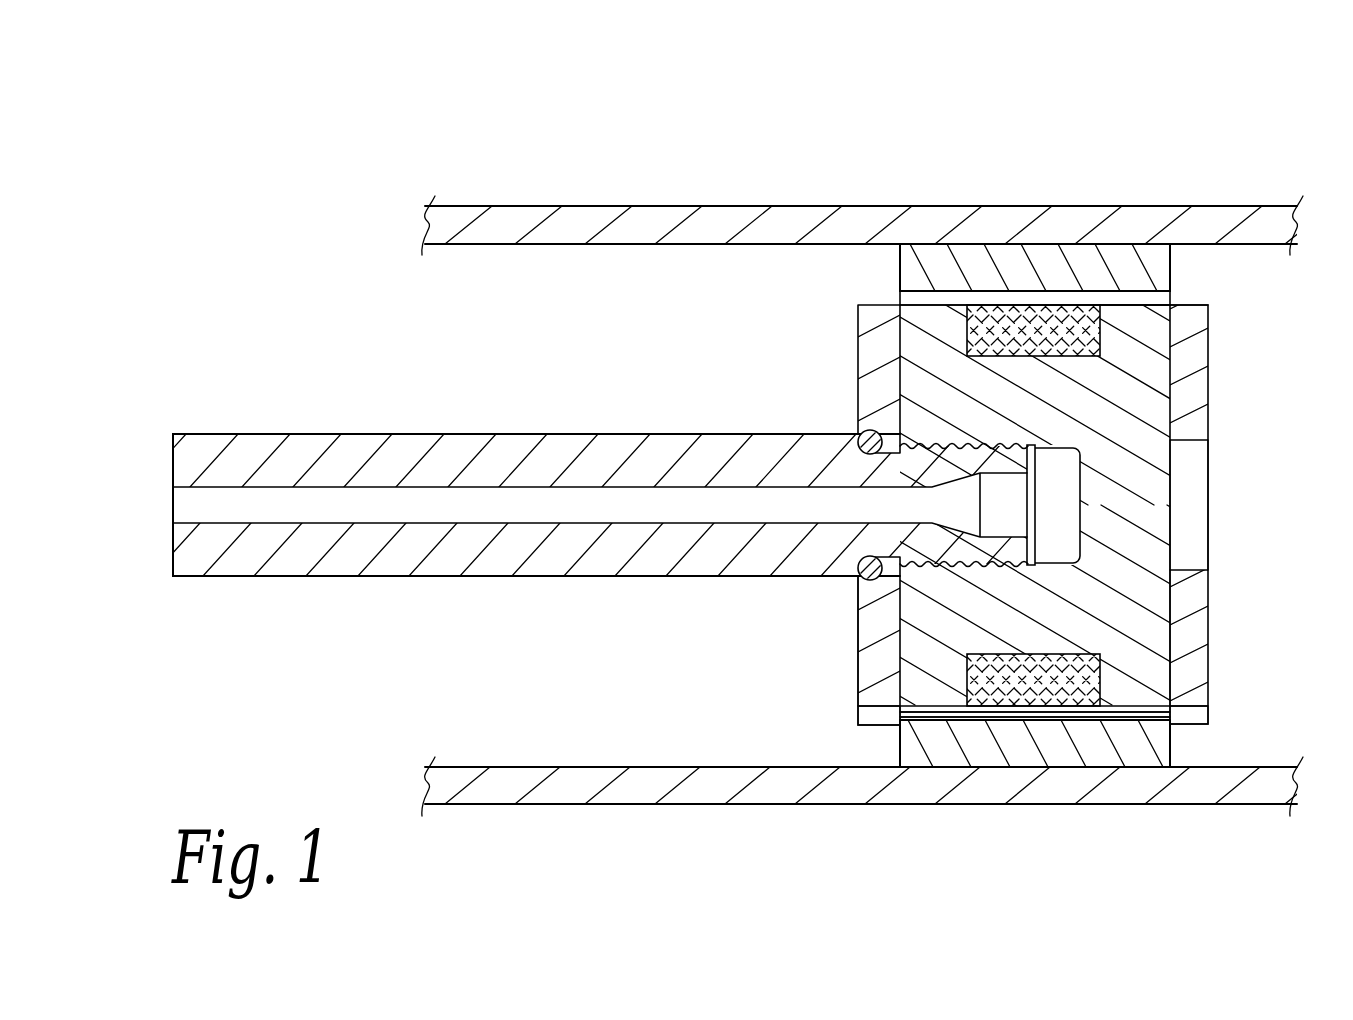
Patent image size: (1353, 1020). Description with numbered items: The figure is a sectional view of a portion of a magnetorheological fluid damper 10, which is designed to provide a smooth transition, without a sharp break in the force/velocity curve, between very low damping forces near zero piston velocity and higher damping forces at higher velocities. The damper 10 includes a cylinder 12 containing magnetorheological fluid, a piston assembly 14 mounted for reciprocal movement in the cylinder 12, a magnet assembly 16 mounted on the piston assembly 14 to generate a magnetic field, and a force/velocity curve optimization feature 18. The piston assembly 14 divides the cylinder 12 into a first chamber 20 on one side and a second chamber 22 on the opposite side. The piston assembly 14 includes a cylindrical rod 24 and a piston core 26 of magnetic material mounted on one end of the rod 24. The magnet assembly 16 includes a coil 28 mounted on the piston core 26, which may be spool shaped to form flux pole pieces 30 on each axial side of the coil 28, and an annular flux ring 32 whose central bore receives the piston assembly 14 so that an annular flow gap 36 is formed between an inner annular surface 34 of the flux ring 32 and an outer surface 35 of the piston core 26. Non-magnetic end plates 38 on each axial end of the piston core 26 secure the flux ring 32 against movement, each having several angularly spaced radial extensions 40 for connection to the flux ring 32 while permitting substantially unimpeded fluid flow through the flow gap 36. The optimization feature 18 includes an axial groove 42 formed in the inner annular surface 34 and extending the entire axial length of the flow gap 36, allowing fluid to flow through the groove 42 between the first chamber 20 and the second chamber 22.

The magnetorheological fluid damper 10 is at (745, 459).
The cylinder 12 is at (853, 167).
The piston assembly 14 is at (1260, 505).
The magnet assembly 16 is at (953, 273).
The force/velocity curve optimization feature 18 is at (994, 805).
The first chamber 20 is at (1166, 191).
The second chamber 22 is at (615, 205).
The cylindrical rod 24 is at (632, 427).
The piston core 26 is at (951, 494).
The coil 28 is at (968, 650).
The flux pole pieces 30 is at (1027, 635).
The annular flux ring 32 is at (1035, 804).
The inner annular surface 34 is at (1104, 423).
The outer surface 35 is at (1142, 216).
The annular flow gap 36 is at (1030, 405).
The non-magnetic end plates 38 is at (1004, 503).
The radial extensions 40 is at (1016, 732).
The axial passage or groove 42 is at (1035, 801).